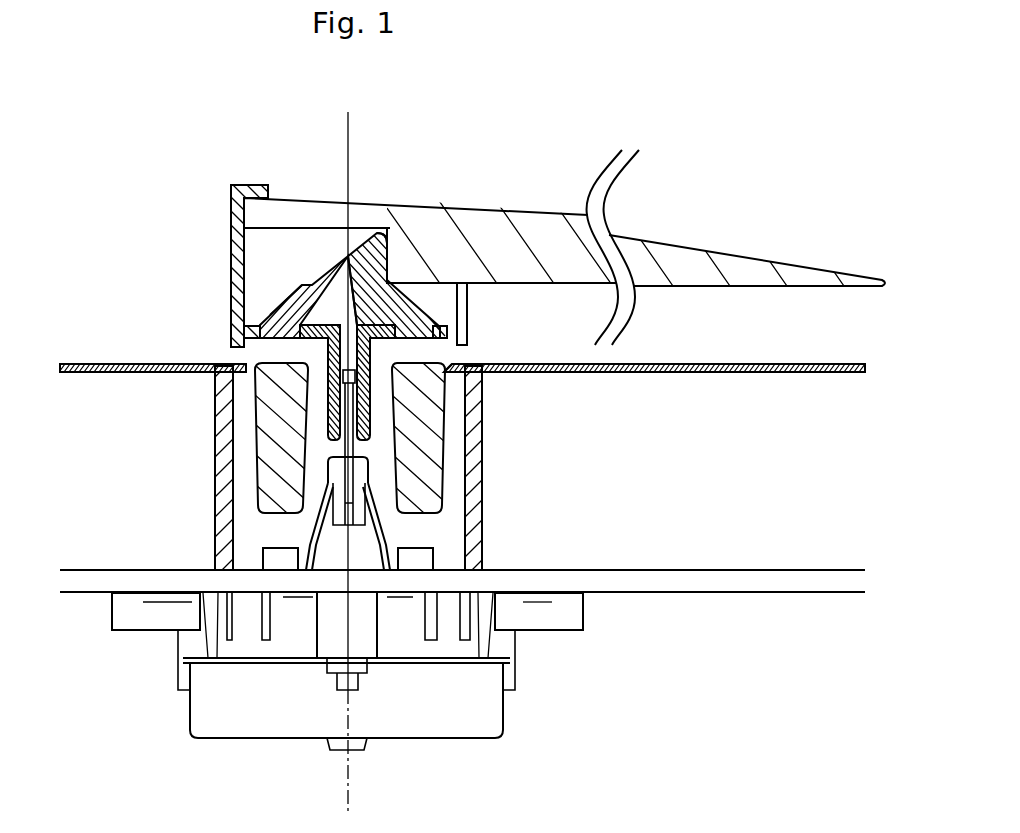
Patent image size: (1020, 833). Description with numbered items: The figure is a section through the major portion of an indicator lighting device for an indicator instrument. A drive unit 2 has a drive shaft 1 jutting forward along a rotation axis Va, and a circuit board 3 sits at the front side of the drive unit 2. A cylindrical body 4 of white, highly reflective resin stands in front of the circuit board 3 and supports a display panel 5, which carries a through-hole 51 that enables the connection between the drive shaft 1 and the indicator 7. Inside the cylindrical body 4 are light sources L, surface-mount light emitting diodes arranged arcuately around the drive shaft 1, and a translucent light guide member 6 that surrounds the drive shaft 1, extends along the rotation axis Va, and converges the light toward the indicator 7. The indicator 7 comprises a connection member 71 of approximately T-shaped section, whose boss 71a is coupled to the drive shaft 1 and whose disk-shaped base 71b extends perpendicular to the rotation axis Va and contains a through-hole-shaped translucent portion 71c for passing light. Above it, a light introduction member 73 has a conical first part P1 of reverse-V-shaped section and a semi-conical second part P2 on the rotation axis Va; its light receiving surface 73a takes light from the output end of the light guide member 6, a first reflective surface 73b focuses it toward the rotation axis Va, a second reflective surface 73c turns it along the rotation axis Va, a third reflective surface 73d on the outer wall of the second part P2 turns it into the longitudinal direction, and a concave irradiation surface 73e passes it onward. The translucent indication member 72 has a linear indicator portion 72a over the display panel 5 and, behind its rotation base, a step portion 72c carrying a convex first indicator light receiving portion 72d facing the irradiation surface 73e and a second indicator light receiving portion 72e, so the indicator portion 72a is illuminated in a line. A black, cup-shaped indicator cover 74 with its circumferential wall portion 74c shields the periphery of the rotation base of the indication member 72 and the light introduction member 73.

The drive shaft 1 is at (375, 452).
The drive unit 2 is at (480, 710).
The circuit board 3 is at (718, 570).
The cylindrical body 4 is at (480, 405).
The display panel 5 is at (672, 372).
The through-hole 51 is at (452, 365).
The light guide member 6 is at (264, 430).
The indicator 7 is at (418, 135).
The connection member 71 is at (337, 318).
The boss 71a is at (357, 400).
The base 71b is at (300, 342).
The translucent portion 71c is at (243, 334).
The indication member 72 is at (548, 205).
The indicator portion 72a is at (668, 250).
The step portion 72c is at (389, 228).
The first indicator light receiving portion 72d is at (390, 284).
The second indicator light receiving portion 72e is at (296, 226).
The light introduction member 73 is at (268, 264).
The light receiving surface 73a is at (260, 339).
The first reflective surface 73b is at (288, 300).
The second reflective surface 73c is at (462, 344).
The third reflective surface 73d is at (351, 227).
The irradiation surface 73e is at (390, 230).
The indicator cover 74 is at (225, 185).
The circumferential wall portion 74c is at (232, 210).
The first part P1 is at (262, 310).
The second part P2 is at (310, 247).
The light sources L is at (275, 555).
The rotation axis Va is at (353, 449).